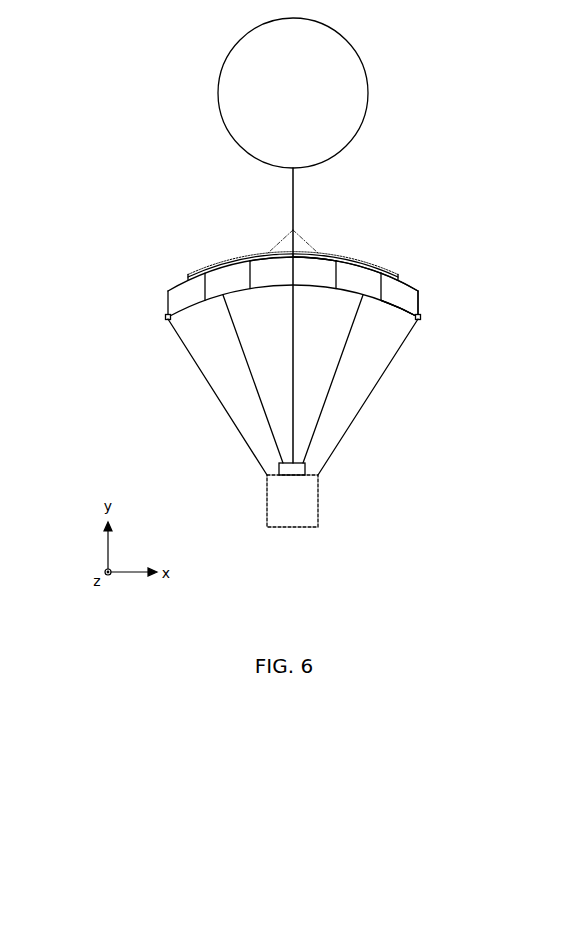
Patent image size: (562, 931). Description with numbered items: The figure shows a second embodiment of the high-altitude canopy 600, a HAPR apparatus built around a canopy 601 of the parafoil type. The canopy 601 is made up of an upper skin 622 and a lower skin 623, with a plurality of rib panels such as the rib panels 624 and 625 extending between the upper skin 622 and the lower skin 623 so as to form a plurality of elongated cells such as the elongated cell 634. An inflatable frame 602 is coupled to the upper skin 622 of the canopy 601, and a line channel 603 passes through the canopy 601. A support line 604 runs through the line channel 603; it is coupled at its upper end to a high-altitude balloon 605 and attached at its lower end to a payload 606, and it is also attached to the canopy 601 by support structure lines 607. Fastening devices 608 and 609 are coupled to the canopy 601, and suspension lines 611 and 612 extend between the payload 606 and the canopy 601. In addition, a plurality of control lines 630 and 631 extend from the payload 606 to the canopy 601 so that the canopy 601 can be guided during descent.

The high-altitude canopy 600 is at (152, 228).
The canopy 601 is at (470, 308).
The inflatable frame 602 is at (374, 268).
The line channel 603 is at (293, 230).
The support line 604 is at (290, 201).
The high-altitude balloon 605 is at (279, 101).
The payload 606 is at (279, 509).
The support structure lines 607 is at (285, 243).
The fastening device 608 is at (165, 320).
The fastening device 609 is at (420, 320).
The suspension line 611 is at (205, 378).
The suspension line 612 is at (373, 385).
The upper skin 622 is at (410, 283).
The lower skin 623 is at (413, 277).
The rib panel 624 is at (378, 283).
The rib panel 625 is at (337, 270).
The control line 630 is at (345, 345).
The control line 631 is at (239, 343).
The elongated cell 634 is at (278, 282).